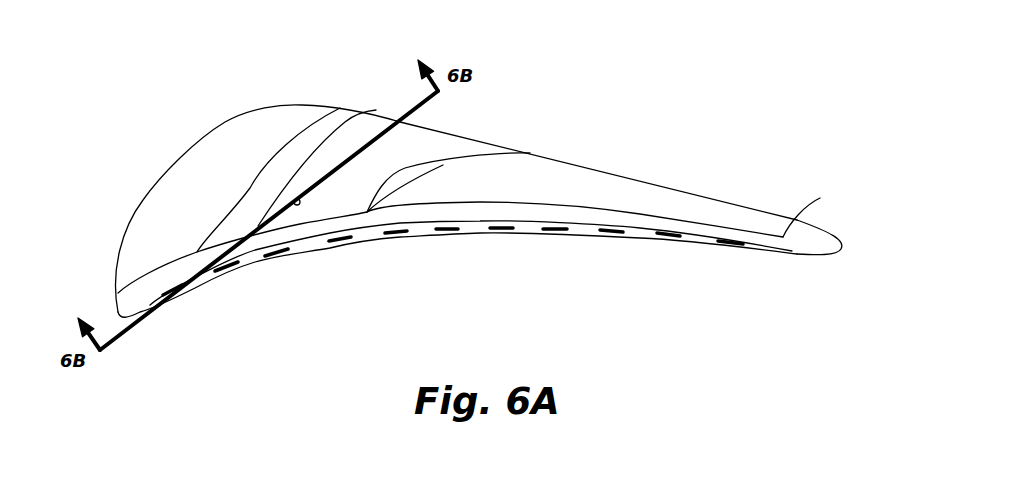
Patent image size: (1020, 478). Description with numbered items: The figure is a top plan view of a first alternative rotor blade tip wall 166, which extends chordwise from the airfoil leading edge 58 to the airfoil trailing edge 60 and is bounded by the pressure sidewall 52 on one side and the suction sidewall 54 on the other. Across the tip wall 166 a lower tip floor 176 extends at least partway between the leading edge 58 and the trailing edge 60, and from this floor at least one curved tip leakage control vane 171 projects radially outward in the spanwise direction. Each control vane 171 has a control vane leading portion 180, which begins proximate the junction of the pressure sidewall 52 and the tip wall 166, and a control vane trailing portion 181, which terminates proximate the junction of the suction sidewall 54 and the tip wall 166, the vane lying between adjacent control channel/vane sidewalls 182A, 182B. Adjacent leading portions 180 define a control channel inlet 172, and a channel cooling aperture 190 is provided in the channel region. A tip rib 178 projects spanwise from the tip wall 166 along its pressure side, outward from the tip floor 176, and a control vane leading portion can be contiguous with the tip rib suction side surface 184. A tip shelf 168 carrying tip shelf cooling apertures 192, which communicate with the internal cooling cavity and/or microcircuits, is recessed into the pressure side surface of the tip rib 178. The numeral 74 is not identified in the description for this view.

The pressure sidewall 52 is at (690, 287).
The suction sidewall 54 is at (640, 138).
The airfoil leading edge 58 is at (117, 317).
The airfoil trailing edge 60 is at (841, 249).
The suction side surface 74 is at (410, 138).
The tip wall 166 is at (829, 152).
The tip shelf 168 is at (397, 234).
The tip leakage control vanes 171 is at (293, 130).
The control channel inlet 172 is at (317, 207).
The tip floor 176 is at (620, 195).
The tip rib 178 is at (793, 252).
The control vane leading portion 180 is at (228, 221).
The control vane trailing portion 181 is at (347, 117).
The control channel/vane sidewall 182A is at (355, 192).
The control channel/vane sidewall 182B is at (358, 121).
The tip rib suction side surface 184 is at (103, 224).
The channel cooling aperture 190 is at (297, 205).
The tip shelf cooling apertures 192 is at (613, 231).